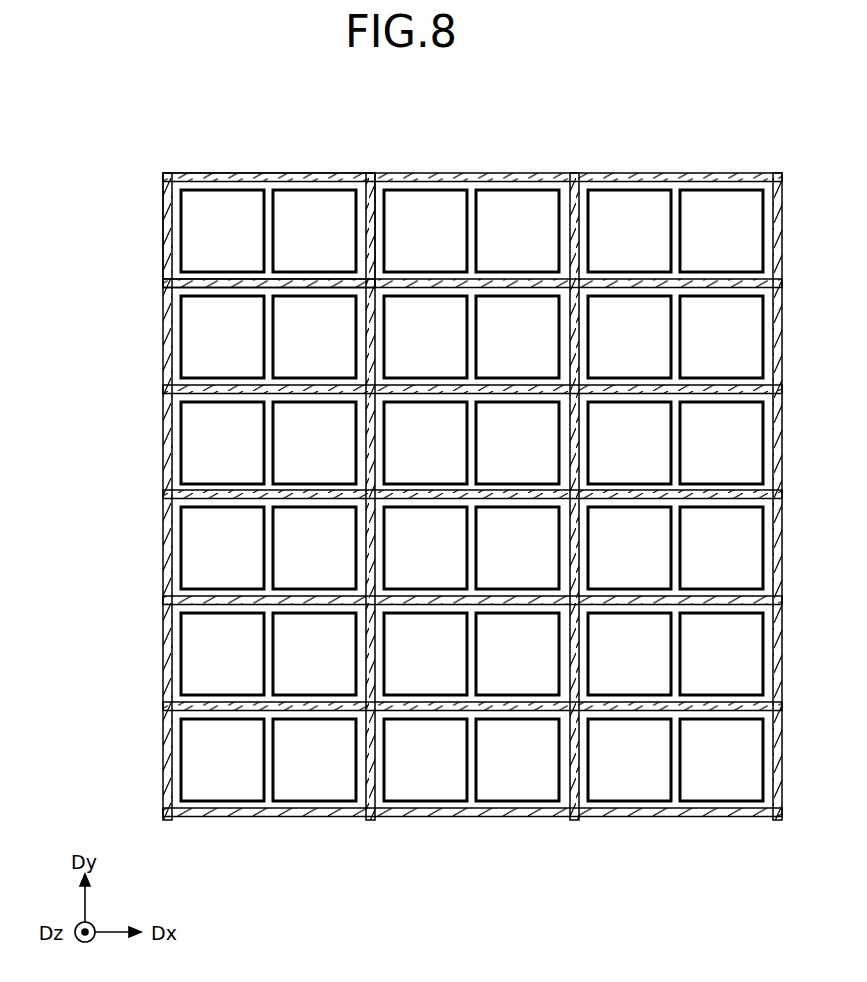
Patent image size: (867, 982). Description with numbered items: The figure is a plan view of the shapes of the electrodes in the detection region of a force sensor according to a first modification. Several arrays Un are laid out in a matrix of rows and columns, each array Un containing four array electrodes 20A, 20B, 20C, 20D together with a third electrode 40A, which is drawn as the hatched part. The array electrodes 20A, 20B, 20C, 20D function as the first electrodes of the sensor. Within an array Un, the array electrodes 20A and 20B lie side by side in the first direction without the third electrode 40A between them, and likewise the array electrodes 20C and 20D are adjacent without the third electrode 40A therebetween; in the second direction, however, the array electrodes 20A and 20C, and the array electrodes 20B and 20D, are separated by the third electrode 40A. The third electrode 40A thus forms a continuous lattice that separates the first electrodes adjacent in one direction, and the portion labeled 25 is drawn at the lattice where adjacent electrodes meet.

The partition wall 25 is at (266, 176).
The array Un is at (370, 172).
The third electrode 40A is at (197, 279).
The array electrode 20A is at (217, 197).
The array electrode 20B is at (317, 196).
The array electrode 20C is at (200, 334).
The array electrode 20D is at (290, 317).